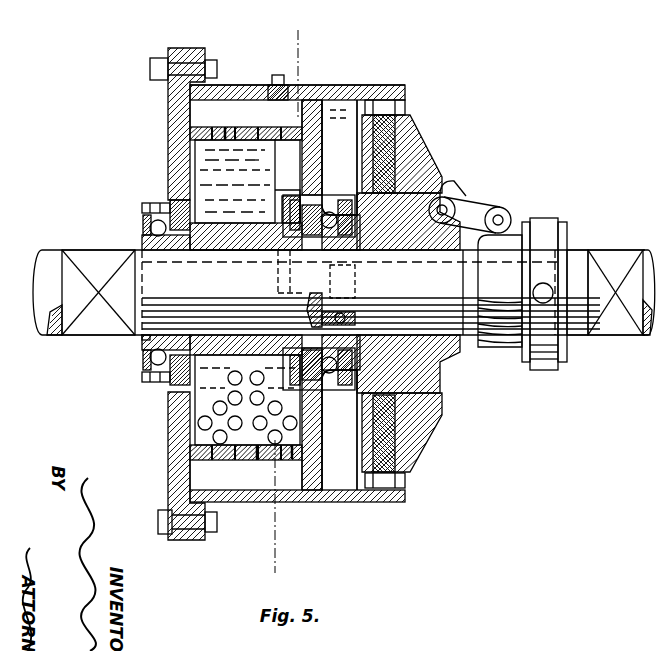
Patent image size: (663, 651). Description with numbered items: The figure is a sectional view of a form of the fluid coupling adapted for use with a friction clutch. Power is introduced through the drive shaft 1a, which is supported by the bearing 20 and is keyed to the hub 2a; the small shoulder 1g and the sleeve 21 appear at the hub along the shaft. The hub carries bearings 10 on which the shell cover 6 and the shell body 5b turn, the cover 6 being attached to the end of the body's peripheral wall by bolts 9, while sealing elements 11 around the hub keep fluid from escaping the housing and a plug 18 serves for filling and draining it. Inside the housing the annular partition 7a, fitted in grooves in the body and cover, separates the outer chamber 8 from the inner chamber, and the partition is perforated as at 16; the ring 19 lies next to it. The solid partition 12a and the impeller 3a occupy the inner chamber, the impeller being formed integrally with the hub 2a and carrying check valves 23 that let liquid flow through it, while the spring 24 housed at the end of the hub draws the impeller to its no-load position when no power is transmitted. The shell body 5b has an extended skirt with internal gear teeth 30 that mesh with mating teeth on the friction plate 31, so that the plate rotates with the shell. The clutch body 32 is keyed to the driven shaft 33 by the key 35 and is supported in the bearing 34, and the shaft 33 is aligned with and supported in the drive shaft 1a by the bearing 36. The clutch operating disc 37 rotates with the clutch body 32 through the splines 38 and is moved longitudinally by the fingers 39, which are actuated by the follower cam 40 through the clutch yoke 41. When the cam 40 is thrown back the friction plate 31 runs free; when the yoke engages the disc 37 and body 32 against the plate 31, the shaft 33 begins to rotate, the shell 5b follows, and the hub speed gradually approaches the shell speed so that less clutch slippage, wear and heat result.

The drive shaft 1a is at (49, 258).
The shaft shoulder 1g is at (142, 338).
The bearing 20 is at (95, 255).
The shell cover 6 is at (168, 123).
The bolts 9 is at (152, 67).
The sealing elements 11 is at (145, 227).
The hub 2a is at (250, 230).
The hub sleeve 21 is at (230, 240).
The bearings 10 is at (190, 252).
The outer chamber 8 is at (246, 292).
The ring 19 is at (246, 116).
The perforations 16 is at (225, 130).
The plug 18 is at (278, 75).
The shell body 5b is at (305, 97).
The partition 12a is at (247, 181).
The spring 24 is at (300, 215).
The clutch body 32 is at (362, 147).
The internal gear teeth 30 is at (405, 106).
The clutch operating disc 37 is at (420, 157).
The friction plate 31 is at (393, 128).
The key 35 is at (430, 250).
The splines 38 is at (447, 186).
The fingers 39 is at (470, 207).
The follower cam 40 is at (505, 240).
The bearing 36 is at (355, 310).
The clutch yoke 41 is at (548, 225).
The driven shaft 33 is at (572, 250).
The bearing 34 is at (613, 254).
The impeller 3a is at (210, 410).
The check valves 23 is at (210, 432).
The partition 7a is at (257, 453).